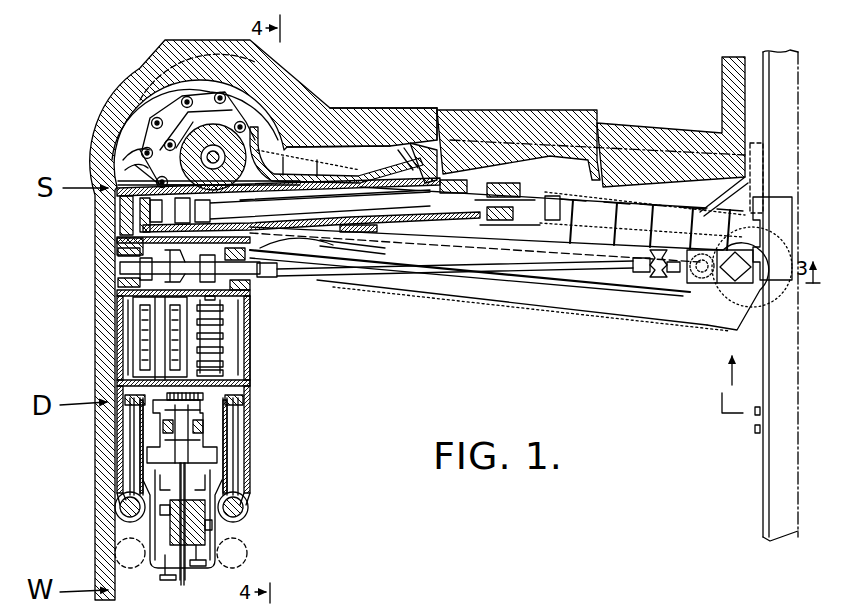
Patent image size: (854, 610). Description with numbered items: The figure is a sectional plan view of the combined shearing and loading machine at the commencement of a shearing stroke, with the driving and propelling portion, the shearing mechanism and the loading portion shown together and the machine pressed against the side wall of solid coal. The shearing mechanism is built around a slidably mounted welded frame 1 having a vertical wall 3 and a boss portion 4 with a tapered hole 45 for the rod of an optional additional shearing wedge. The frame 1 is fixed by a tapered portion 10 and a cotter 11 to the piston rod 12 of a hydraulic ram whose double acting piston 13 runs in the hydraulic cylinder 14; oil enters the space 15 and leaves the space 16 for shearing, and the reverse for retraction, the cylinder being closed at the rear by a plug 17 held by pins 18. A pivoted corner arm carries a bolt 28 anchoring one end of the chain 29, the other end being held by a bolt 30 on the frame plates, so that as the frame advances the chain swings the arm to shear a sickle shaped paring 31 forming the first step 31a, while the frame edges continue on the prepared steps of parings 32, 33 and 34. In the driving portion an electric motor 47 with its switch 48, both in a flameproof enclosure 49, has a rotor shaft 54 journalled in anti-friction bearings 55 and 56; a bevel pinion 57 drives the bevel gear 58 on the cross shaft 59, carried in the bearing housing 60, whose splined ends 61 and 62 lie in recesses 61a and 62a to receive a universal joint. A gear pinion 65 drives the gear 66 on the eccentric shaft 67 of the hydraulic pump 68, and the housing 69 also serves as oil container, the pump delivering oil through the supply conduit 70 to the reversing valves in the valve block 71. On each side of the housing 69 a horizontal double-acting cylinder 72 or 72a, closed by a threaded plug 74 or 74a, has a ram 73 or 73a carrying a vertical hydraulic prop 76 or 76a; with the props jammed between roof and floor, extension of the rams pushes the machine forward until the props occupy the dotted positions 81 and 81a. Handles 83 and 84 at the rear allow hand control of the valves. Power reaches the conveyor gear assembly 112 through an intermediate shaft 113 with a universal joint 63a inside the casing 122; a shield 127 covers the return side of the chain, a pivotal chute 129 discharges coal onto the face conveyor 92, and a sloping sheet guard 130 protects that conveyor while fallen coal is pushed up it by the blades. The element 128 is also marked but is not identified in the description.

The frame 1 is at (470, 150).
The vertical wall 3 is at (392, 150).
The boss portion 4 is at (550, 143).
The tapered portion 10 is at (443, 193).
The cotter 11 is at (473, 197).
The piston rod 12 is at (310, 228).
The double acting piston 13 is at (140, 133).
The hydraulic cylinder 14 is at (407, 190).
The space 15 is at (123, 185).
The space 16 is at (372, 195).
The plug 17 is at (120, 207).
The pins 18 is at (120, 240).
The bolt 28 is at (140, 152).
The chain 29 is at (172, 112).
The bolt 30 is at (294, 104).
The sickle shaped paring 31 is at (182, 83).
The first step of parings 31a is at (349, 162).
The step of parings 32 is at (421, 126).
The step of parings 33 is at (513, 193).
The step of parings 34 is at (647, 172).
The tapered hole 45 is at (510, 250).
The electric motor 47 is at (160, 337).
The switch 48 is at (222, 353).
The flameproof enclosure 49 is at (255, 378).
The rotor shaft 54 is at (117, 333).
The anti-friction bearing 55 is at (120, 298).
The anti-friction bearing 56 is at (115, 380).
The bevel pinion 57 is at (127, 293).
The bevel gear 58 is at (220, 330).
The cross shaft 59 is at (212, 266).
The housing 60 is at (225, 313).
The end of cross shaft 61 is at (120, 265).
The recess 61a is at (120, 275).
The end of cross shaft 62 is at (355, 273).
The recess 62a is at (280, 276).
The universal joint 63a is at (642, 264).
The gear pinion 65 is at (143, 420).
The gear 66 is at (230, 410).
The eccentric shaft 67 is at (213, 447).
The hydraulic pump 68 is at (230, 480).
The housing 69 is at (220, 530).
The supply conduit 70 is at (138, 467).
The valve block 71 is at (182, 540).
The horizontal hydraulic cylinder 72 is at (254, 467).
The horizontal hydraulic cylinder 72a is at (116, 460).
The ram 73 is at (247, 477).
The ram 73a is at (176, 478).
The threaded plug 74 is at (203, 408).
The threaded plug 74a is at (140, 400).
The vertical hydraulic prop 76 is at (238, 510).
The vertical hydraulic prop 76a is at (132, 510).
The relative position of prop 81 is at (240, 558).
The relative position of prop 81a is at (125, 553).
The handle 83 is at (165, 578).
The handle 84 is at (198, 566).
The face conveyor 92 is at (763, 473).
The gear assembly 112 is at (713, 281).
The intermediate shaft 113 is at (527, 225).
The casing 122 is at (767, 327).
The shield 127 is at (603, 318).
The rod 128 is at (388, 290).
The pivotal chute 129 is at (767, 217).
The sloping sheet guard 130 is at (755, 170).